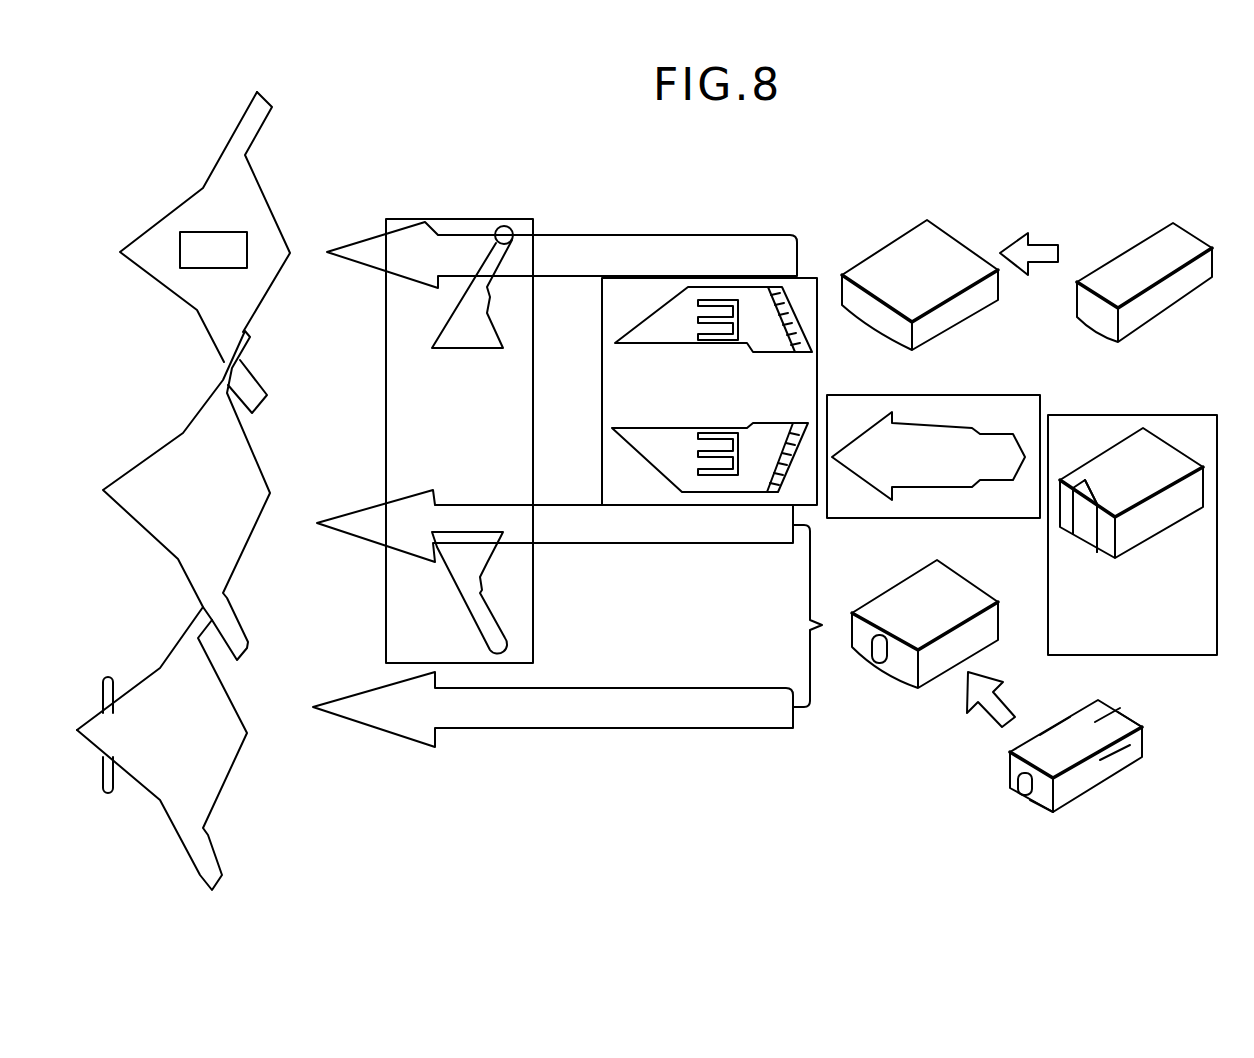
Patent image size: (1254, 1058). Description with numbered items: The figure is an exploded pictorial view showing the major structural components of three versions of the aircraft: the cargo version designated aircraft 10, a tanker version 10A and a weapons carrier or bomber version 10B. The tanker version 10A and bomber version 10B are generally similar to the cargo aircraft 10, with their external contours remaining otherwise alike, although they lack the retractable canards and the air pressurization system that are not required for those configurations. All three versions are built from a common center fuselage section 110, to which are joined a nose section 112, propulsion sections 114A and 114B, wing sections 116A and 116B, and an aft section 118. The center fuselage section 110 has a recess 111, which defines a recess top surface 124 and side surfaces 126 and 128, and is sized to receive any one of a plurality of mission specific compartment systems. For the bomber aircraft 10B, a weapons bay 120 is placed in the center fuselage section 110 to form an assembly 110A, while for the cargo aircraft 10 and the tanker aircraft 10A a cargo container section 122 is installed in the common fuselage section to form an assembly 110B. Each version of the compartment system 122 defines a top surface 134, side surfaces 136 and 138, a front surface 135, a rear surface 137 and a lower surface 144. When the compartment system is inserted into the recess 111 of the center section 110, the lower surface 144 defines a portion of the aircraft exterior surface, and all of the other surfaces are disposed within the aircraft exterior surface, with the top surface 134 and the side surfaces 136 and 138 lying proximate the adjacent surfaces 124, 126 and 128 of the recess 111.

The aircraft 10 is at (137, 684).
The tanker version 10A is at (143, 460).
The weapons carrier version 10B is at (150, 229).
The center fuselage section 110 is at (942, 423).
The assembly 110A is at (900, 232).
The assembly 110B is at (877, 597).
The recess 111 is at (1080, 541).
The nose section 112 is at (837, 440).
The propulsion section 114A is at (742, 506).
The propulsion section 114B is at (745, 284).
The wing section 116A is at (507, 641).
The wing section 116B is at (504, 224).
The aft section 118 is at (1000, 427).
The weapons bay 120 is at (1135, 240).
The cargo container section 122 is at (1008, 772).
The recess top surface 124 is at (1088, 527).
The side surface 126 is at (1094, 537).
The side surface 128 is at (1073, 486).
The top surface 134 is at (1110, 718).
The front surface 135 is at (1030, 796).
The side surface 136 is at (1057, 723).
The rear surface 137 is at (1135, 722).
The side surface 138 is at (1118, 762).
The lower surface 144 is at (1042, 810).